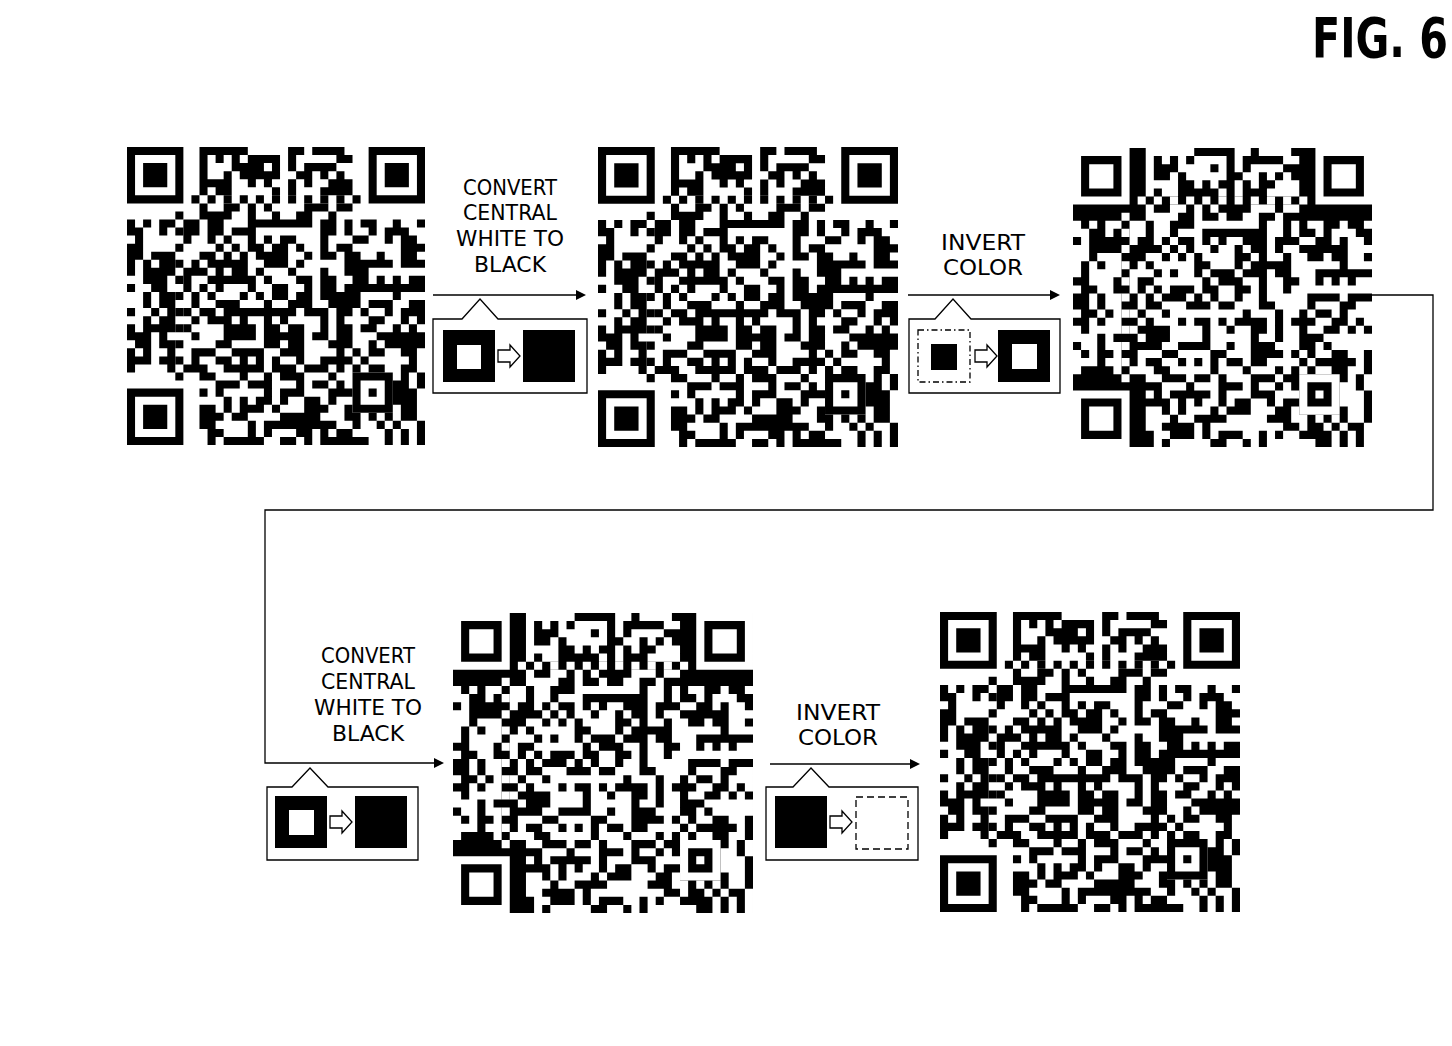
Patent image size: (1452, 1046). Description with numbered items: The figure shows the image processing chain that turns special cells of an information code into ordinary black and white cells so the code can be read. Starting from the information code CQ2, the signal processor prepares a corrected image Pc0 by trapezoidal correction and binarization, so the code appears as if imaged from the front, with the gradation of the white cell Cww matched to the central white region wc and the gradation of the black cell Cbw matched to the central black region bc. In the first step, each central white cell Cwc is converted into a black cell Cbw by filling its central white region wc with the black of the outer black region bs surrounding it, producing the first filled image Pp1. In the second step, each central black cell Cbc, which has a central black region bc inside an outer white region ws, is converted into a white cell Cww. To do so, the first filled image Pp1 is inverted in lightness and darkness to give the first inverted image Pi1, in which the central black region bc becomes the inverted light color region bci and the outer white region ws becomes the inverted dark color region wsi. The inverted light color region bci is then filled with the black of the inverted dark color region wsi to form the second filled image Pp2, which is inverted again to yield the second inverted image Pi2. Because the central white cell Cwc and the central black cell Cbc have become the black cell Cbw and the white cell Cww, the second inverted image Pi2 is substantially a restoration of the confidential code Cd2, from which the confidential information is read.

The information code CQ2 is at (144, 137).
The corrected image Pc0 is at (395, 137).
The first filled image Pp1 is at (871, 137).
The first inverted image Pi1 is at (1343, 137).
The second filled image Pp2 is at (734, 603).
The confidential code Cd2 is at (962, 603).
The second inverted image Pi2 is at (1201, 603).
The central white region wc is at (465, 368).
The outer black region bs is at (483, 384).
The central white cell Cwc is at (508, 430).
The black cell Cbw is at (548, 388).
The central black region bc is at (939, 371).
The outer white region ws is at (952, 383).
The central black cell Cbc is at (983, 430).
The inverted light color region bci is at (293, 834).
The inverted dark color region wsi is at (316, 850).
The white cell Cww is at (874, 852).